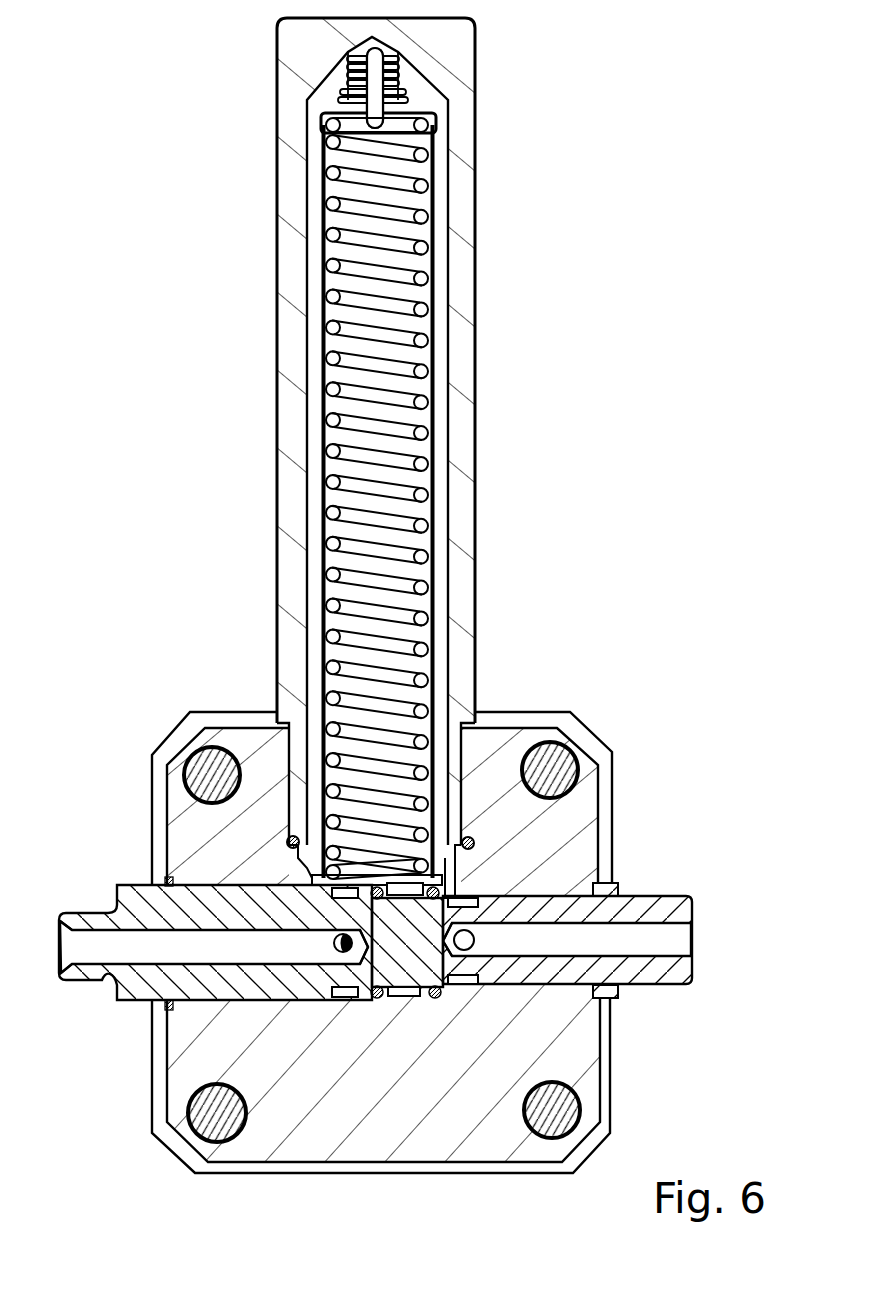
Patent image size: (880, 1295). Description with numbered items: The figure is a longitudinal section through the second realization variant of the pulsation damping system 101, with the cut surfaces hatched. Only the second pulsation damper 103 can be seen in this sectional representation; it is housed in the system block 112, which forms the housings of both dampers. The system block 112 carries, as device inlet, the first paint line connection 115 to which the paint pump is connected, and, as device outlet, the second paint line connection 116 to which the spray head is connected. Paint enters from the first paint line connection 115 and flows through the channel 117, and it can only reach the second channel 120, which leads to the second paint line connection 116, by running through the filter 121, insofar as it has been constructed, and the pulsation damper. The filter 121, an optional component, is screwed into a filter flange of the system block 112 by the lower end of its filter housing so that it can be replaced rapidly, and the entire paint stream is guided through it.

The pulsation damping system 101 is at (375, 595).
The second pulsation damper 103 is at (408, 887).
The system block 112 is at (567, 822).
The first paint line connection 115 is at (212, 947).
The second paint line connection 116 is at (531, 935).
The channel 117 is at (133, 948).
The second channel 120 is at (635, 940).
The filter 121 is at (505, 110).